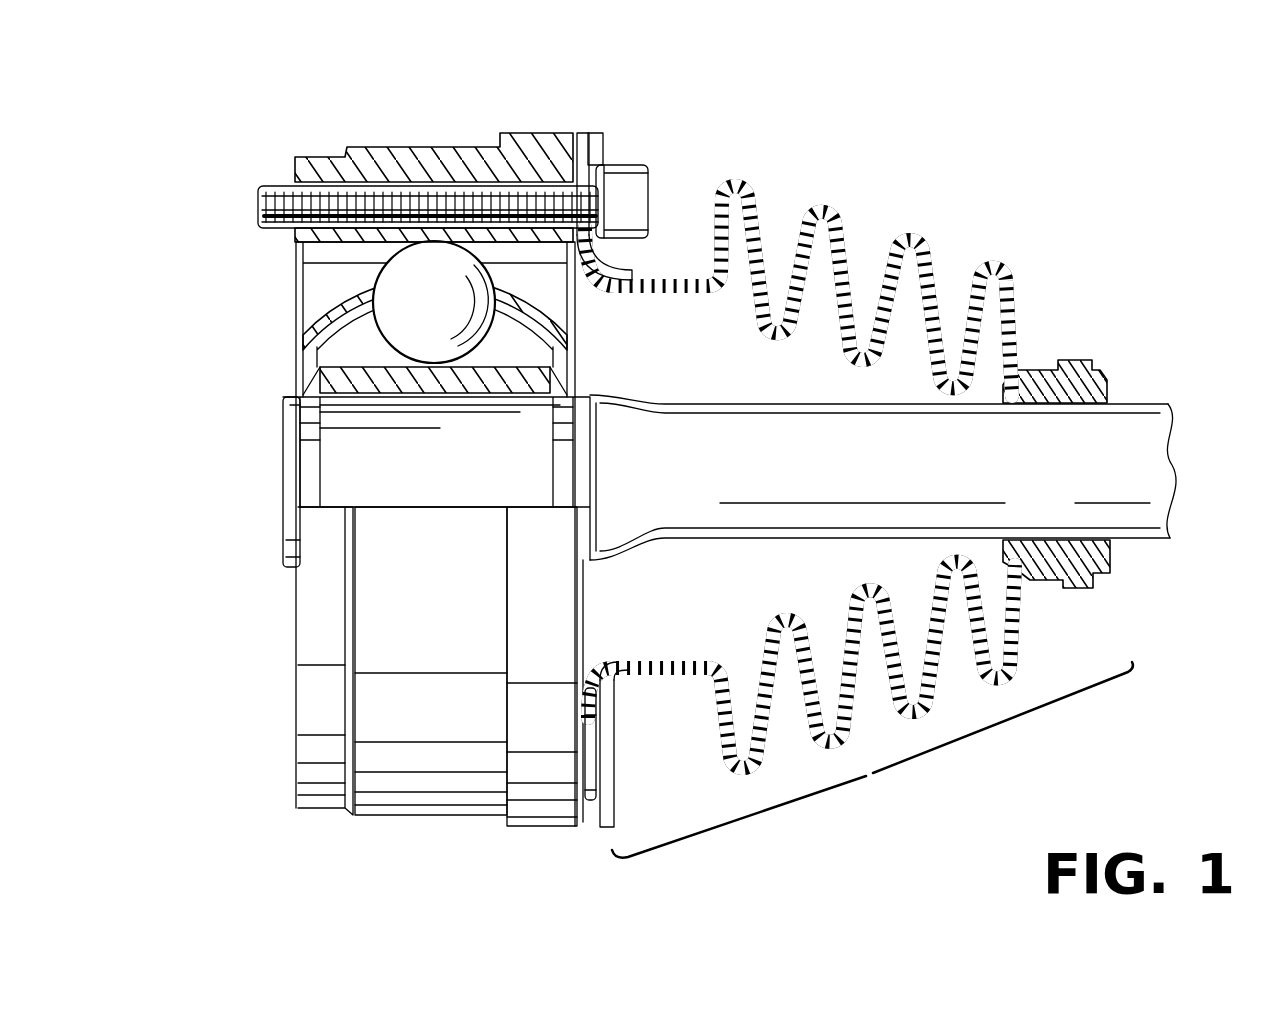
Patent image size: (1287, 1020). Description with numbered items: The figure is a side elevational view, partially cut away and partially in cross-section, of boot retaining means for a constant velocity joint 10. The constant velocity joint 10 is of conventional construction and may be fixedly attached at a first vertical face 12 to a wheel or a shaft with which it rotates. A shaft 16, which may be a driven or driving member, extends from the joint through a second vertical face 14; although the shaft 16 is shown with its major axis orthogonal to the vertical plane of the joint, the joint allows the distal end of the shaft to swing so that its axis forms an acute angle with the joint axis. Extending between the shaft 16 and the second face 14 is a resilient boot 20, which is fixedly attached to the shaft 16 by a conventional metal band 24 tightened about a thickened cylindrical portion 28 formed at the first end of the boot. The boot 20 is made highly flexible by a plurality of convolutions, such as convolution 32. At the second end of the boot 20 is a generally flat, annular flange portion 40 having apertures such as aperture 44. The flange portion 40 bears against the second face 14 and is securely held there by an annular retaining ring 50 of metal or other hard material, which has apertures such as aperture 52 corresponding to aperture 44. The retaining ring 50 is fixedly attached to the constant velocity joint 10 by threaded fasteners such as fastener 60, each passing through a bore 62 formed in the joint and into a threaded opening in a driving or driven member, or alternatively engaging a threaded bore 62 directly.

The constant velocity joint 10 is at (420, 757).
The first vertical face 12 is at (300, 653).
The second vertical face 14 is at (586, 640).
The shaft 16 is at (1157, 435).
The resilient boot 20 is at (874, 780).
The metal band 24 is at (1075, 358).
The thickened cylindrical portion 28 is at (1095, 557).
The convolution 32 is at (843, 222).
The flange portion 40 is at (590, 832).
The aperture 44 is at (575, 770).
The retaining ring 50 is at (580, 168).
The aperture 52 is at (606, 759).
The fastener 60 is at (623, 200).
The bore 62 is at (283, 186).